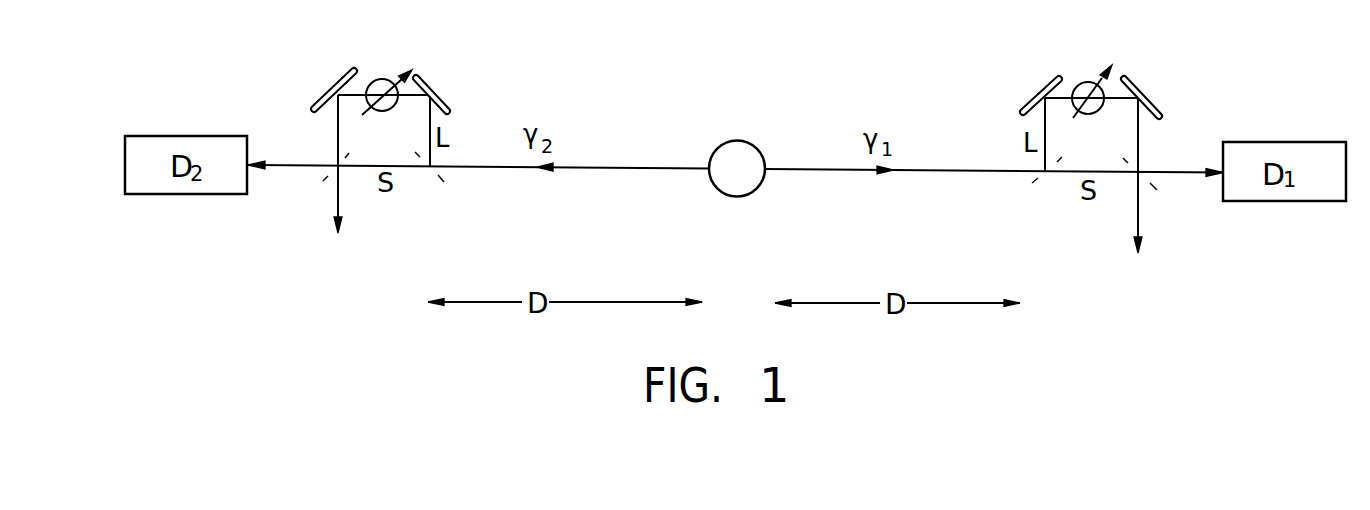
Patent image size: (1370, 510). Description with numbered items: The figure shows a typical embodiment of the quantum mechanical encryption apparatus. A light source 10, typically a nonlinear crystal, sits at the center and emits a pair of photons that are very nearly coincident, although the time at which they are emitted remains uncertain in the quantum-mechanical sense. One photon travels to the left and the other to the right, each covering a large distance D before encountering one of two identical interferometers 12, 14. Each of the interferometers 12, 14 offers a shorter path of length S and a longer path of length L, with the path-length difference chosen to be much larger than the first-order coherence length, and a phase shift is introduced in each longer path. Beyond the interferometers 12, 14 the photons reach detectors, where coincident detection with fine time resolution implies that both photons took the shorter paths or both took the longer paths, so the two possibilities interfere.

The light source 10 is at (748, 141).
The interferometer 12 is at (386, 99).
The interferometer 14 is at (1092, 103).